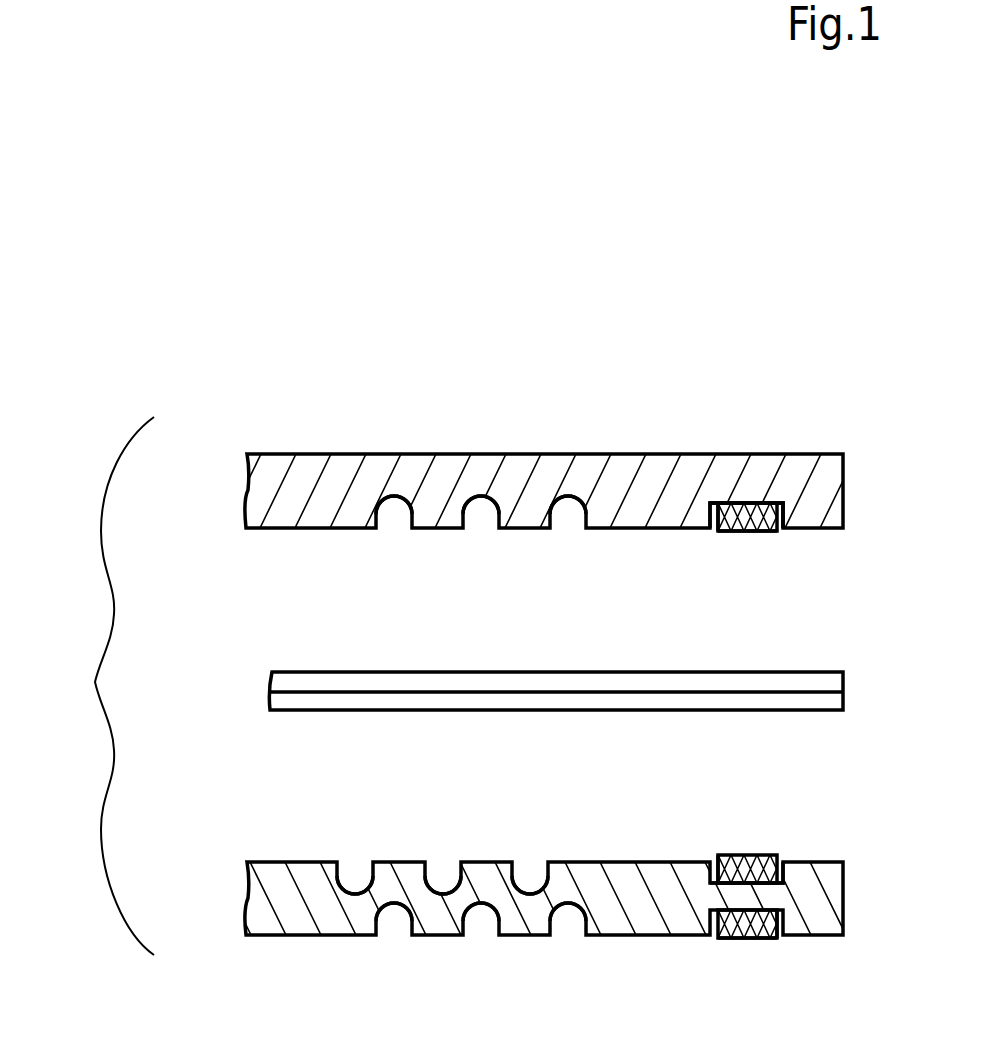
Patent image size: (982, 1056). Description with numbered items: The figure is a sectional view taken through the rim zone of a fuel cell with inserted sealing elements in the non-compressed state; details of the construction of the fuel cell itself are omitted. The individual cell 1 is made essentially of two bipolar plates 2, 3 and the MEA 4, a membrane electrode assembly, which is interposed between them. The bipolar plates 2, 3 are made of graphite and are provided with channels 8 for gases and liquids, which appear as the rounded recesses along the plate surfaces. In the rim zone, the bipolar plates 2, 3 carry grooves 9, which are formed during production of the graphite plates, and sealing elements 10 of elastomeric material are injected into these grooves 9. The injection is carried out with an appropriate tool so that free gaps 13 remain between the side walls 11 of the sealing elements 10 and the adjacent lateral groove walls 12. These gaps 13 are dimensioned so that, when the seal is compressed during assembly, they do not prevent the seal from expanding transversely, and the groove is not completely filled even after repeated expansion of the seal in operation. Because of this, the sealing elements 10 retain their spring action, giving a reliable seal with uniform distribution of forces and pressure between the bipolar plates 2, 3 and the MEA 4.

The individual cell 1 is at (99, 686).
The bipolar plate 2 is at (535, 475).
The bipolar plate 3 is at (520, 927).
The MEA (membrane electrode assembly) 4 is at (236, 690).
The channels 8 is at (570, 517).
The grooves 9 is at (762, 503).
The sealing elements 10 is at (753, 527).
The side walls 11 is at (777, 527).
The lateral groove walls 12 is at (783, 513).
The free gaps 13 is at (715, 520).